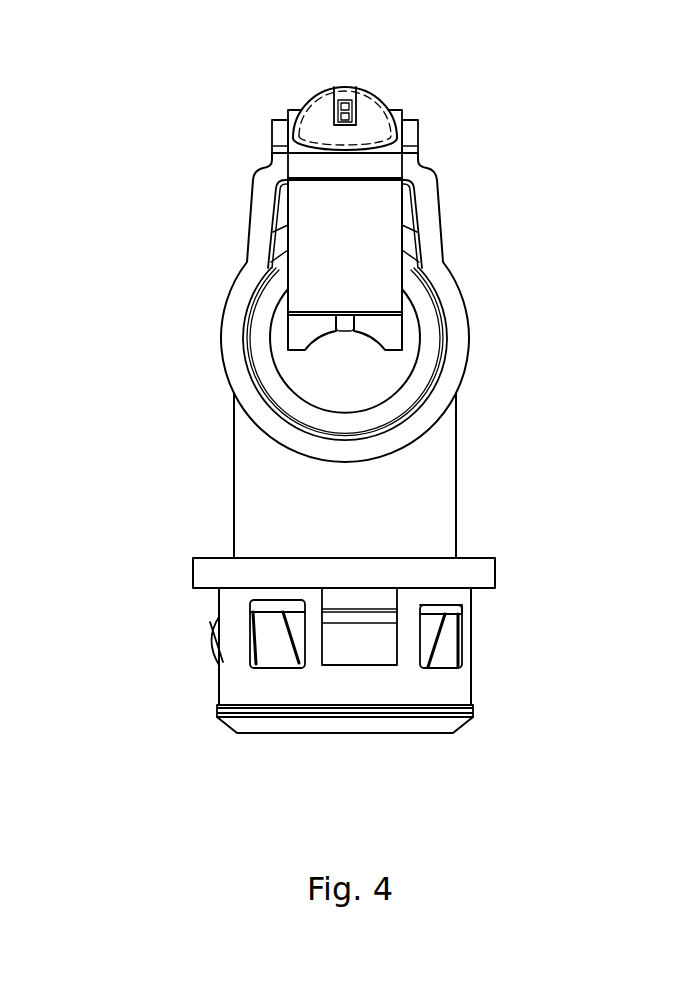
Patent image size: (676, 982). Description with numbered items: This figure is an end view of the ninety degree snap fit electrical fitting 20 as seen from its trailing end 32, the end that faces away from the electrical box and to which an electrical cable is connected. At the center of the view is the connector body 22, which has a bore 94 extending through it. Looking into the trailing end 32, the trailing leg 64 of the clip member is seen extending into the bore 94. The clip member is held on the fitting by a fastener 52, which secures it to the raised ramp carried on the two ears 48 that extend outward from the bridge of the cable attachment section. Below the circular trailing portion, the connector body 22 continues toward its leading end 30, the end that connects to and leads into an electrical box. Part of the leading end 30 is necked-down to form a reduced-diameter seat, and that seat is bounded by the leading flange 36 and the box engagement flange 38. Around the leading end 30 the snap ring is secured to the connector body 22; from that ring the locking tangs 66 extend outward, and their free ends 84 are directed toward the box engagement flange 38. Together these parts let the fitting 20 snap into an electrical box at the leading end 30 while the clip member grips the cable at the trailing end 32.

The ninety degree snap fit electrical fitting 20 is at (150, 136).
The connector body 22 is at (456, 477).
The leading end 30 is at (345, 733).
The trailing end 32 is at (445, 280).
The leading flange 36 is at (463, 722).
The box engagement flange 38 is at (495, 571).
The ears 48 is at (428, 202).
The fastener 52 is at (368, 108).
The trailing leg 64 is at (334, 248).
The locking tangs 66 is at (452, 640).
The free ends 84 is at (467, 617).
The bore 94 is at (345, 371).